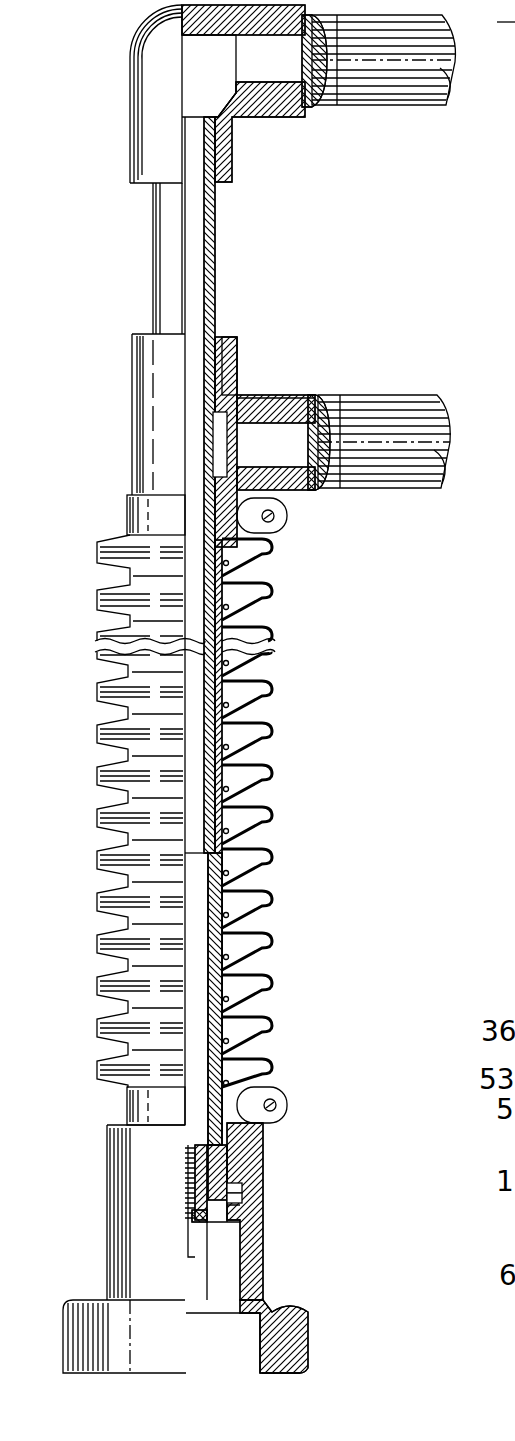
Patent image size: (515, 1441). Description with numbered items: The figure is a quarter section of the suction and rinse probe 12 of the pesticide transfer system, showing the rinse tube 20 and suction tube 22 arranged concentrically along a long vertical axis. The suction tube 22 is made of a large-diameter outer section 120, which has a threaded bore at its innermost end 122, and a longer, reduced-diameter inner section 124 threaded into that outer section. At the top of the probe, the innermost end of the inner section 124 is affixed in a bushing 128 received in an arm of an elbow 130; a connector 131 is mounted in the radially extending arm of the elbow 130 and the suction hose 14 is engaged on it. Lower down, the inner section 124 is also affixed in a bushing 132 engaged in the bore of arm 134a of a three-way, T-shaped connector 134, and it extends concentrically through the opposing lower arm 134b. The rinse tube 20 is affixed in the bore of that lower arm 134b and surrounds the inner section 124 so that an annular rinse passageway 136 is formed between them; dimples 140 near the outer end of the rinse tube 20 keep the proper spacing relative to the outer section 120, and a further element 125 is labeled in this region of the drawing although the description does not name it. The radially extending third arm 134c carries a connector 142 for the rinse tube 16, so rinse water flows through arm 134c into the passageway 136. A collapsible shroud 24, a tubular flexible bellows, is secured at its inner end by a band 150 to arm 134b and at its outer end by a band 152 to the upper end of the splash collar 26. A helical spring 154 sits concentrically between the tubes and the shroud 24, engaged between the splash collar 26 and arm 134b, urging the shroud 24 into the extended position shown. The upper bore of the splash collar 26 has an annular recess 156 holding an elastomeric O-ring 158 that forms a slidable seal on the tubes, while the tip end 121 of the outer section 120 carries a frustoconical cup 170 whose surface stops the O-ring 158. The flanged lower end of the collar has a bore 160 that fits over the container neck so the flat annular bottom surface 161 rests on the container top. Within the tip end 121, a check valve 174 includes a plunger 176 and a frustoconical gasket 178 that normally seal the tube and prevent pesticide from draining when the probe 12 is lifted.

The suction and rinse probe 12 is at (289, 689).
The suction hose 14 is at (446, 108).
The rinse tube 16 is at (440, 397).
The rinse tube 20 is at (233, 753).
The suction tube 22 is at (241, 930).
The collapsible shroud 24 is at (270, 815).
The splash collar 26 is at (264, 1240).
The outer section of suction tube 120 is at (218, 887).
The tip end of outer suction tube section 121 is at (243, 1170).
The innermost end of outer section 122 is at (228, 790).
The inner section of suction tube 124 is at (212, 672).
The shed spacer 125 is at (229, 845).
The bushing 128 is at (216, 183).
The elbow 130 is at (133, 77).
The connector 131 is at (324, 100).
The bushing 132 is at (219, 337).
The three-way T-shaped connector 134 is at (236, 405).
The arm of T-connector 134a is at (237, 343).
The opposing lower arm of T-connector 134b is at (240, 539).
The radially extending third arm of T-connector 134c is at (306, 395).
The annular rinse passageway 136 is at (246, 586).
The dimples 140 is at (238, 713).
The connector 142 is at (290, 394).
The band 150 is at (130, 513).
The band 152 is at (130, 1104).
The helical spring 154 is at (246, 978).
The annular recess 156 is at (243, 1190).
The elastomeric O-ring or gasket 158 is at (243, 1203).
The bore 160 is at (272, 1302).
The flat annular bottom surface 161 is at (300, 1373).
The frustoconical cup 170 is at (217, 1227).
The check valve 174 is at (183, 1149).
The plunger 176 is at (188, 1246).
The frustoconical gasket 178 is at (207, 1217).